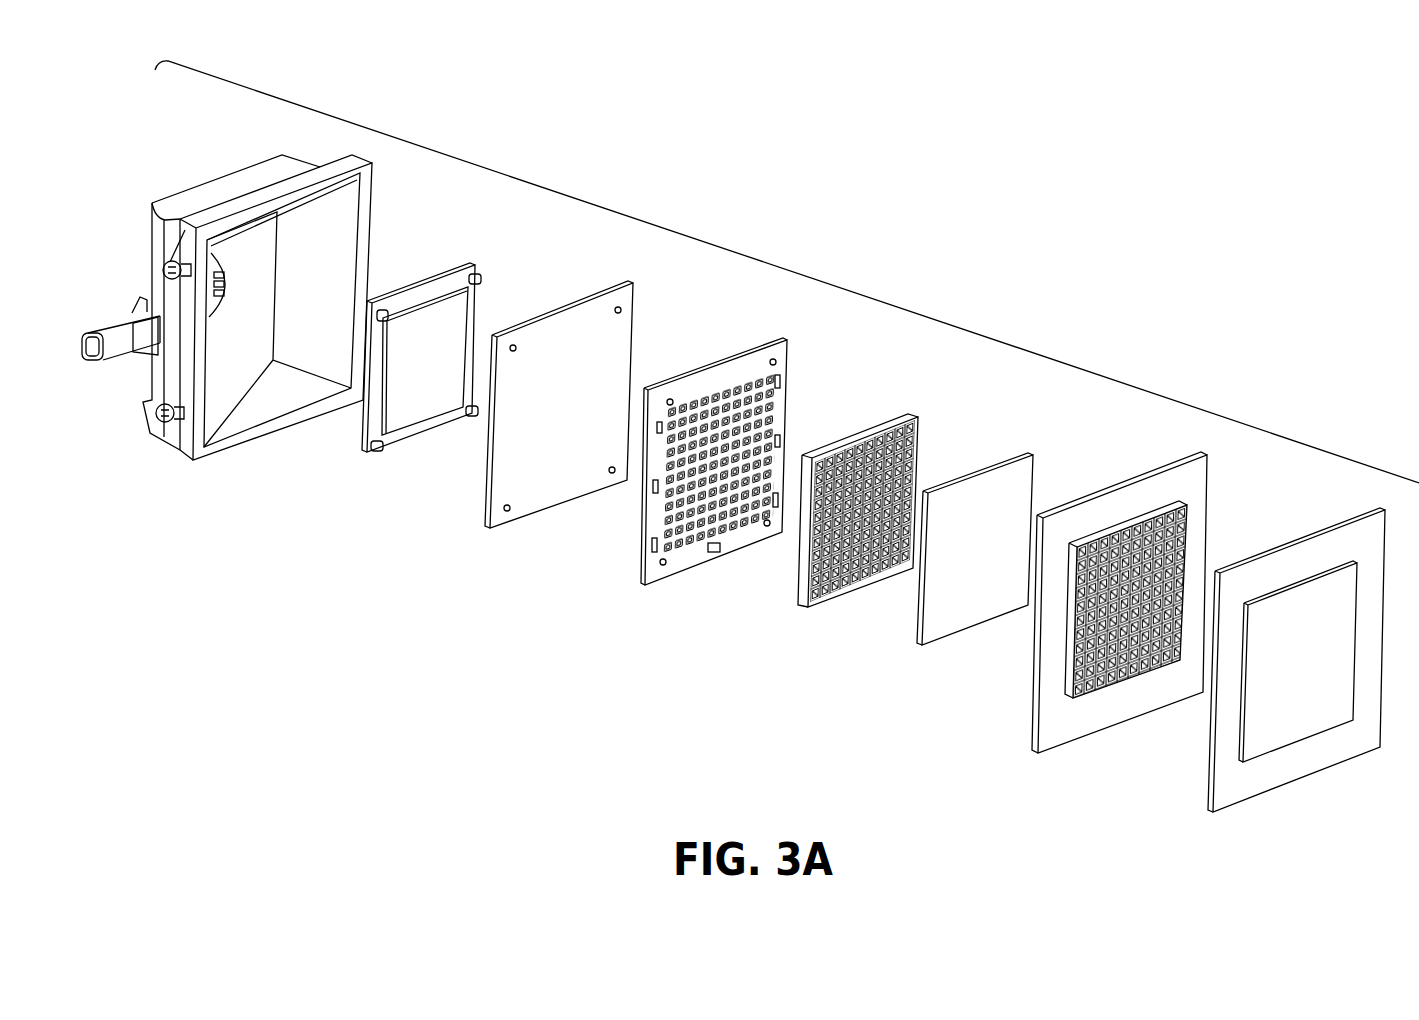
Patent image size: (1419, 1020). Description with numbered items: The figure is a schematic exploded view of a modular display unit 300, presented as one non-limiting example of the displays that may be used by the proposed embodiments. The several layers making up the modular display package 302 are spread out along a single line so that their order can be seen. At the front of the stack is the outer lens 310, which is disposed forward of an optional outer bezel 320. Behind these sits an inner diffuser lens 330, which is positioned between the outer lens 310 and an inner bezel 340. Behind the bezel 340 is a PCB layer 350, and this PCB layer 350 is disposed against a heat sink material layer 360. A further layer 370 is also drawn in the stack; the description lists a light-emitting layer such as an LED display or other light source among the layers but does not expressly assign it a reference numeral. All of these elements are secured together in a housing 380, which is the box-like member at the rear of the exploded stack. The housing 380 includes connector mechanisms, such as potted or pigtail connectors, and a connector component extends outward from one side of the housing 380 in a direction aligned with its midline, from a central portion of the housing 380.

The modular display unit 300 is at (486, 695).
The modular display package 302 is at (811, 263).
The outer lens 310 is at (1240, 783).
The outer bezel 320 is at (1078, 728).
The inner diffuser lens 330 is at (968, 612).
The inner bezel 340 is at (858, 595).
The PCB layer 350 is at (685, 555).
The heat sink material layer 360 is at (557, 485).
The gasket frame 370 is at (425, 405).
The housing 380 is at (245, 413).